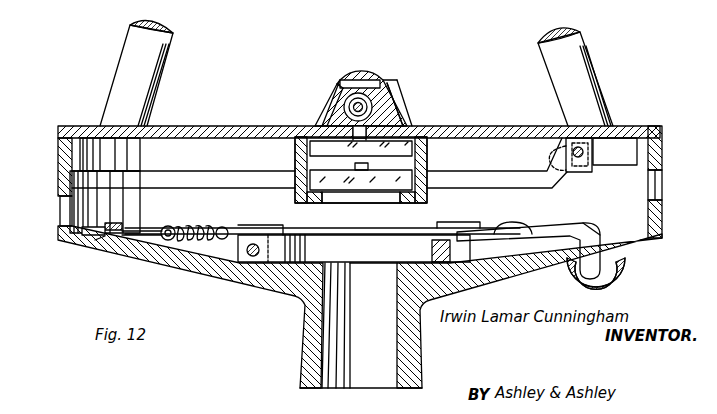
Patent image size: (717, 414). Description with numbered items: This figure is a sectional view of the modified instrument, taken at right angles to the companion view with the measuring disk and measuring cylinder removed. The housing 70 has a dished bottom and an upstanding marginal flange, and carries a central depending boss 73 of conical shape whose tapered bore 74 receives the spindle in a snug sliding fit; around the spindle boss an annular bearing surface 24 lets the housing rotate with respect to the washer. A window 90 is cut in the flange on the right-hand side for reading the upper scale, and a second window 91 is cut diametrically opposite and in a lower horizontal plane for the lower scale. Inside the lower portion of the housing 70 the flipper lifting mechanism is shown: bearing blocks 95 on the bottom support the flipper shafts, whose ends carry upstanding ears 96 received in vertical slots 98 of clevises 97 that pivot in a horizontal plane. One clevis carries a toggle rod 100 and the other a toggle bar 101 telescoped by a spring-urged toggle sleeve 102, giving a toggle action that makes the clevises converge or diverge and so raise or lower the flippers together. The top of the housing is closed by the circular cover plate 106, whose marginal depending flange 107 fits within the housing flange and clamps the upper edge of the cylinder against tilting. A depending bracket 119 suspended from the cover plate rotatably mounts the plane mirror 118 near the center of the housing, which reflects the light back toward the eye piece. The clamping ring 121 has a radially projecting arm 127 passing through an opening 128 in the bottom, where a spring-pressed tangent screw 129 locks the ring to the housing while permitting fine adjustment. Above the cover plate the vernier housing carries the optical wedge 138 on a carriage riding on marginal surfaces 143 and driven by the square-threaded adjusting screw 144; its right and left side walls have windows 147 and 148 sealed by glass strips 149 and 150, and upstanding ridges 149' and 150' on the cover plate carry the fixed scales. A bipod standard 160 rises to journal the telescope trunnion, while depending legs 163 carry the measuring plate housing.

The annular bearing surface 24 is at (394, 265).
The housing 70 is at (132, 262).
The central depending boss 73 is at (302, 334).
The tapered bore 74 is at (398, 352).
The window 90 is at (652, 172).
The window 91 is at (62, 208).
The bearing blocks 95 is at (502, 228).
The upstanding ears 96 is at (110, 257).
The clevises 97 is at (464, 226).
The vertical slots 98 is at (143, 226).
The toggle rod 100 is at (398, 228).
The toggle bar 101 is at (136, 228).
The toggle sleeve 102 is at (250, 228).
The cover plate 106 is at (199, 126).
The depending flange 107 is at (62, 156).
The plane mirror 118 is at (322, 180).
The depending bracket 119 is at (432, 158).
The clamping ring 121 is at (308, 244).
The radially projecting arm 127 is at (544, 235).
The opening 128 is at (614, 256).
The tangent screw 129 is at (622, 272).
The optical wedge 138 is at (430, 126).
The marginal surfaces 143 is at (328, 148).
The adjusting screw 144 is at (358, 96).
The window 147 is at (398, 114).
The window 148 is at (318, 105).
The window strip 149 is at (401, 69).
The upstanding ridge 149' is at (420, 99).
The window strip 150 is at (315, 74).
The upstanding ridge 150' is at (283, 115).
The bipod standard 160 is at (578, 72).
The depending legs 163 is at (112, 82).